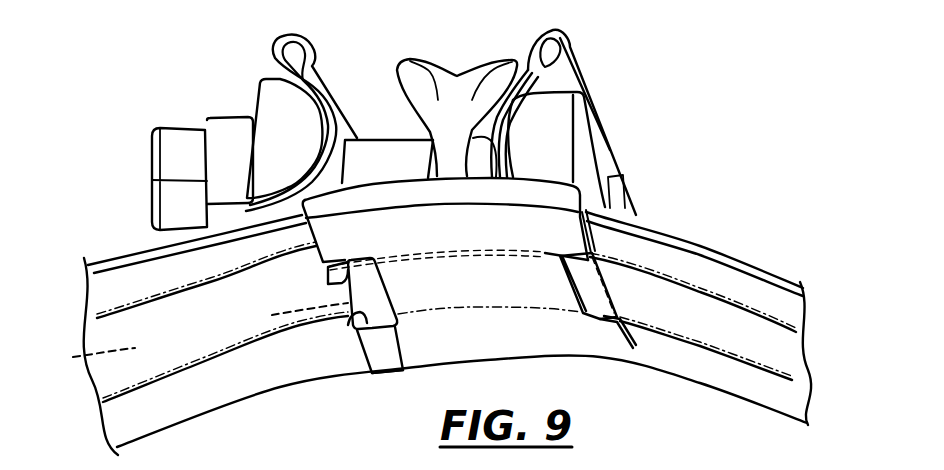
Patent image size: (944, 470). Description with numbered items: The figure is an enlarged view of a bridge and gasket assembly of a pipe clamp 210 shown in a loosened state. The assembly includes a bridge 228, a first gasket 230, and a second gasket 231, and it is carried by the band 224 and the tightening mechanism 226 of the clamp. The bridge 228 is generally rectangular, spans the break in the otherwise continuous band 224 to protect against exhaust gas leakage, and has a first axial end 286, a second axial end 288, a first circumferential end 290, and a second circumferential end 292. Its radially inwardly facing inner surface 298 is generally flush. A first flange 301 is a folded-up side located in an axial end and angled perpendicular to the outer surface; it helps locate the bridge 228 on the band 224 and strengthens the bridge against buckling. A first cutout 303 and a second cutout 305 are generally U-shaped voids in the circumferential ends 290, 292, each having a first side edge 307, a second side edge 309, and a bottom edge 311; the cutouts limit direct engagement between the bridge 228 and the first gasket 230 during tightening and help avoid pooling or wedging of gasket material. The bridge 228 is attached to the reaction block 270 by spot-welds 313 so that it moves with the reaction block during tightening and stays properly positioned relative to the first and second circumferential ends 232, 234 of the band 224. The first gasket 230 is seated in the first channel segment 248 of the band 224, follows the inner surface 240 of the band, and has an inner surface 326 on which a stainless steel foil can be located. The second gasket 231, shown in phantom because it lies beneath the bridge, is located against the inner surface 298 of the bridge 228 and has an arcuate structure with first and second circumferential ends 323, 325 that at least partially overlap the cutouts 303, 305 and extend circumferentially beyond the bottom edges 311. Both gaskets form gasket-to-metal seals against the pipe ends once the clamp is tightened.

The pipe clamp 210 is at (620, 78).
The band 224 is at (712, 238).
The tightening mechanism 226 is at (254, 93).
The bridge 228 is at (398, 376).
The first gasket 230 is at (199, 372).
The second gasket 231 is at (514, 318).
The first circumferential end of the band 232 is at (253, 228).
The second circumferential end of the band 234 is at (620, 248).
The inner surface of the band 240 is at (745, 287).
The first channel segment 248 is at (158, 296).
The reaction block 270 is at (457, 88).
The first axial end 286 is at (489, 203).
The second axial end 288 is at (440, 367).
The first circumferential end of the bridge 290 is at (358, 333).
The second circumferential end of the bridge 292 is at (640, 352).
The inner surface of the bridge 298 is at (588, 213).
The first flange 301 is at (390, 186).
The first cutout 303 is at (383, 268).
The second cutout 305 is at (568, 288).
The first side edge 307 is at (328, 275).
The second side edge 309 is at (348, 325).
The bottom edge 311 is at (377, 292).
The spot-welds 313 is at (470, 236).
The first circumferential end of the second gasket 323 is at (288, 315).
The second circumferential end of the second gasket 325 is at (562, 270).
The inner surface of the first gasket 326 is at (81, 359).